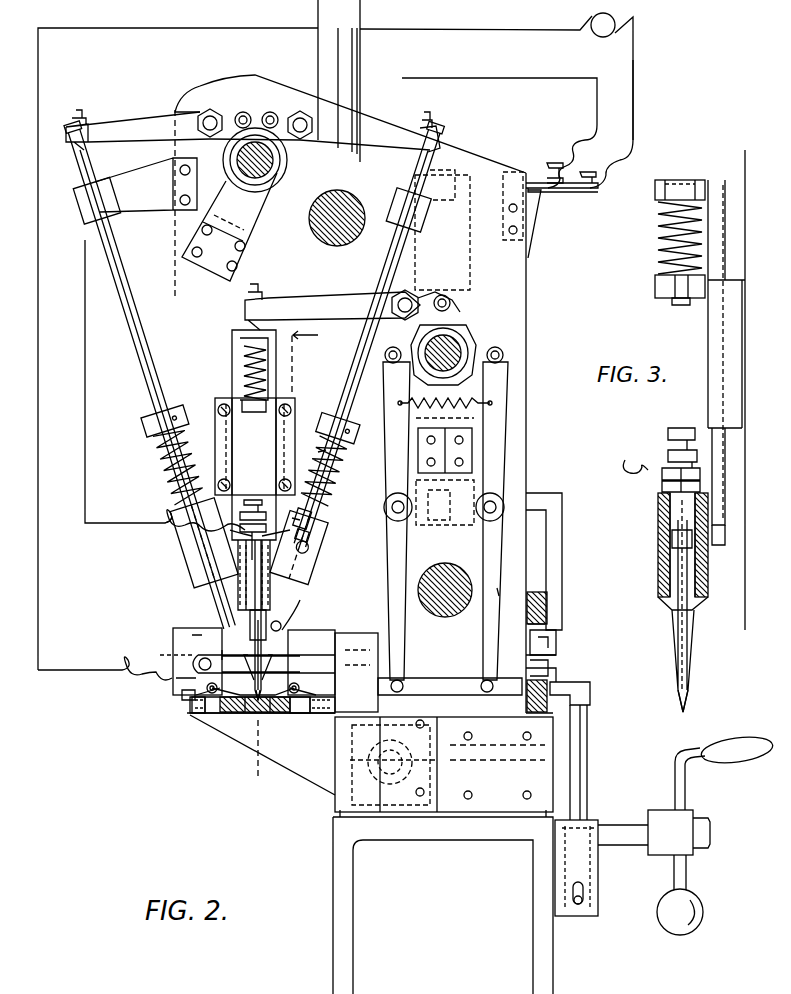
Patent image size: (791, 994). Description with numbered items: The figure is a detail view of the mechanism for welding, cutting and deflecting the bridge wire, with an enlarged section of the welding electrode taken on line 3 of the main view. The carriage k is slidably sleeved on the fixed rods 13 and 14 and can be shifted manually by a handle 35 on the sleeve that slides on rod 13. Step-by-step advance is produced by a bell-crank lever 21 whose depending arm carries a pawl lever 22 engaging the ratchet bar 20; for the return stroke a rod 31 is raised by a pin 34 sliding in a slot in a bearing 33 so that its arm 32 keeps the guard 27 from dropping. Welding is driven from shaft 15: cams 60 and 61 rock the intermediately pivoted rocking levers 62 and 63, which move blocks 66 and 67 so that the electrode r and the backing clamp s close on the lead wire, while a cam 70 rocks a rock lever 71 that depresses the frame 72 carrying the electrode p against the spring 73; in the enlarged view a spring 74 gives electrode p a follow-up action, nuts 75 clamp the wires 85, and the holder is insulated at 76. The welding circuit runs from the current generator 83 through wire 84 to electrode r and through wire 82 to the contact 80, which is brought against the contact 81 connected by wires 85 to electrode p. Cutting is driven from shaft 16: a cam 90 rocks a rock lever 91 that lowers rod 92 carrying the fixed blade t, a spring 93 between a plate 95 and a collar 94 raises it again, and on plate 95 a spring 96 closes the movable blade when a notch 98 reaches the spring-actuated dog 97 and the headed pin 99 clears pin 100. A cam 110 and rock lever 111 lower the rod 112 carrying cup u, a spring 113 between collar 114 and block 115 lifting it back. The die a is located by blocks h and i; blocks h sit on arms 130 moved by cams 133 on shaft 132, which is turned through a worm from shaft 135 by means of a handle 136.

In FIG. 2, the wire 84 is at (175, 32).
In FIG. 2, the current generator 83 is at (602, 38).
In FIG. 2, the wire 82 is at (634, 101).
In FIG. 2, the wires 85 is at (490, 78).
In FIG. 2, the handle 35 is at (360, 32).
In FIG. 2, the rock lever 111 is at (156, 118).
In FIG. 2, the rock lever 91 is at (366, 131).
In FIG. 2, the shaft 16 is at (258, 156).
In FIG. 2, the cam 90 is at (289, 162).
In FIG. 2, the cam 110 is at (197, 151).
In FIG. 2, the fixed rod 13 is at (345, 198).
In FIG. 2, the rod 112 is at (126, 384).
In FIG. 2, the collar 114 is at (148, 425).
In FIG. 2, the spring 113 is at (166, 462).
In FIG. 2, the block 115 is at (178, 512).
In FIG. 2, the rod 92 is at (377, 355).
In FIG. 2, the collar 94 is at (323, 422).
In FIG. 2, the spring 93 is at (338, 478).
In FIG. 2, the plate or block 95 is at (306, 569).
In FIG. 2, the spring 96 is at (326, 528).
In FIG. 2, the spring-actuated dog 97 is at (302, 556).
In FIG. 2, the pin 100 is at (312, 541).
In FIG. 2, the headed pin 99 is at (320, 456).
In FIG. 2, the notch 98 is at (293, 520).
In FIG. 2, the rock lever 71 is at (318, 301).
In FIG. 2, the cam 70 is at (448, 318).
In FIG. 2, the shaft 15 is at (455, 345).
In FIG. 2, the cam 60 is at (400, 345).
In FIG. 2, the cam 61 is at (493, 348).
In FIG. 2, the rocking lever 62 is at (393, 580).
In FIG. 2, the fixed rod 14 is at (448, 575).
In FIG. 2, the rocking lever 63 is at (507, 600).
In FIG. 2, the carriage k is at (527, 318).
In FIG. 3, the carriage k is at (745, 160).
In FIG. 2, the contact 80 is at (555, 190).
In FIG. 2, the contact 81 is at (536, 183).
In FIG. 2, the frame 72 is at (232, 372).
In FIG. 3, the frame 72 is at (693, 316).
In FIG. 2, the spring 73 is at (268, 373).
In FIG. 3, the spring 73 is at (658, 238).
In FIG. 2, the section line 3— 3 is at (262, 563).
In FIG. 2, the nuts 75 is at (246, 537).
In FIG. 3, the nuts 75 is at (660, 492).
In FIG. 2, the block 66 is at (177, 646).
In FIG. 2, the block 67 is at (326, 647).
In FIG. 2, the cup u is at (238, 673).
In FIG. 2, the arms 130 is at (241, 752).
In FIG. 2, the shear blade t is at (300, 608).
In FIG. 2, the electrode p is at (280, 690).
In FIG. 3, the electrode p is at (690, 699).
In FIG. 2, the block h is at (200, 715).
In FIG. 2, the die a is at (233, 715).
In FIG. 2, the electrode r is at (245, 716).
In FIG. 2, the backing clamp s is at (271, 716).
In FIG. 2, the block i is at (296, 716).
In FIG. 2, the shaft 132 is at (336, 830).
In FIG. 2, the cams 133 is at (418, 842).
In FIG. 2, the ratchet bar 20 is at (547, 626).
In FIG. 2, the pawl lever 22 is at (556, 648).
In FIG. 2, the guard 27 is at (548, 671).
In FIG. 2, the bell-crank lever 21 is at (563, 564).
In FIG. 2, the arm 32 is at (592, 696).
In FIG. 2, the rod 31 is at (591, 757).
In FIG. 2, the bearing 33 is at (600, 892).
In FIG. 2, the pin 34 is at (578, 908).
In FIG. 2, the shaft 135 is at (623, 823).
In FIG. 2, the handle 136 is at (690, 793).
In FIG. 3, the spring 74 is at (658, 531).
In FIG. 3, the insulation 76 is at (726, 521).